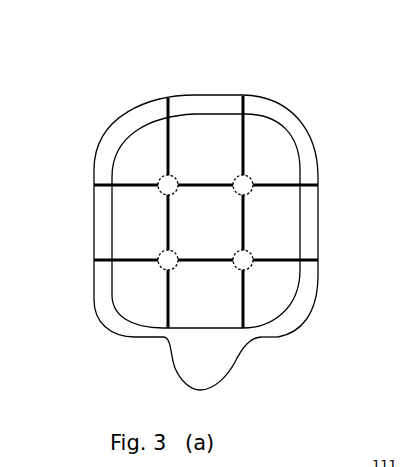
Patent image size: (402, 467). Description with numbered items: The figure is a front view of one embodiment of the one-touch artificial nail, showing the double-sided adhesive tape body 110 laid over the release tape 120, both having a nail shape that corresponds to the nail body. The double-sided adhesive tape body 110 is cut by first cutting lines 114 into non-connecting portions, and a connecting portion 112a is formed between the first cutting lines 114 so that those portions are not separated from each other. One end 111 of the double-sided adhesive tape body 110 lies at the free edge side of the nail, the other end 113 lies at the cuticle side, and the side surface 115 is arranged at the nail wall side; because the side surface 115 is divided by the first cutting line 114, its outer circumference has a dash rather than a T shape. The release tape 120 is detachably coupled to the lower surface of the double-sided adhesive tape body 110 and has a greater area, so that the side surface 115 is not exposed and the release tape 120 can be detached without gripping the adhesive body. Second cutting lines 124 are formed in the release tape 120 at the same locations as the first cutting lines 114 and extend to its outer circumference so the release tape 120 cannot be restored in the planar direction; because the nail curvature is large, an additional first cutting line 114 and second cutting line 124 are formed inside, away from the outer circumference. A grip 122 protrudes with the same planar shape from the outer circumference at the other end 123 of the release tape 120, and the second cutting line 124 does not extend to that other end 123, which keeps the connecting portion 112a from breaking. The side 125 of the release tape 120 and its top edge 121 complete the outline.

The double-sided adhesive tape body 110 is at (225, 114).
The one end 111 is at (183, 117).
The connecting portion 112a is at (161, 176).
The other end 113 is at (200, 328).
The first cutting line 114 is at (278, 183).
The side surface 115 is at (110, 222).
The release tape 120 is at (319, 288).
The outer top portion 121 is at (259, 96).
The grip 122 is at (197, 370).
The other end of the release tape 123 is at (275, 336).
The second cutting line 124 is at (305, 184).
The side of the release tape 125 is at (93, 247).